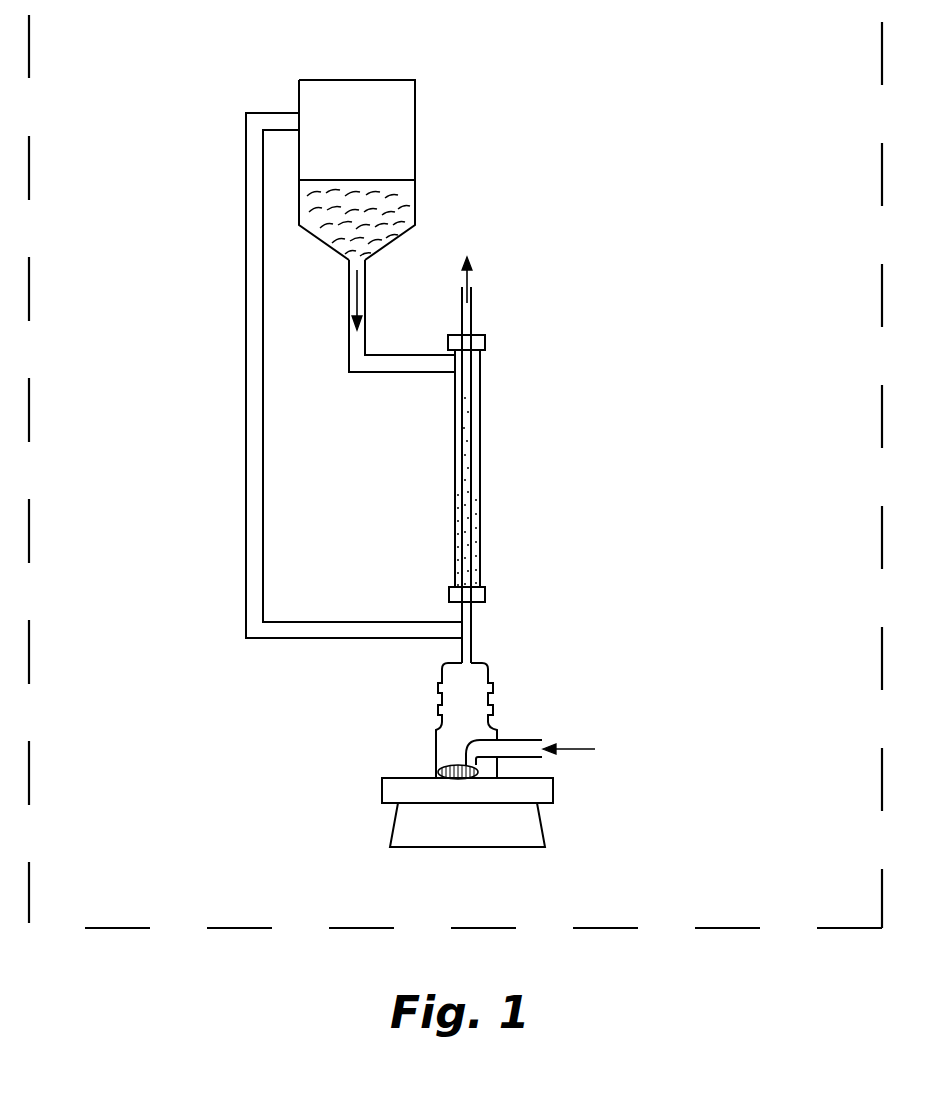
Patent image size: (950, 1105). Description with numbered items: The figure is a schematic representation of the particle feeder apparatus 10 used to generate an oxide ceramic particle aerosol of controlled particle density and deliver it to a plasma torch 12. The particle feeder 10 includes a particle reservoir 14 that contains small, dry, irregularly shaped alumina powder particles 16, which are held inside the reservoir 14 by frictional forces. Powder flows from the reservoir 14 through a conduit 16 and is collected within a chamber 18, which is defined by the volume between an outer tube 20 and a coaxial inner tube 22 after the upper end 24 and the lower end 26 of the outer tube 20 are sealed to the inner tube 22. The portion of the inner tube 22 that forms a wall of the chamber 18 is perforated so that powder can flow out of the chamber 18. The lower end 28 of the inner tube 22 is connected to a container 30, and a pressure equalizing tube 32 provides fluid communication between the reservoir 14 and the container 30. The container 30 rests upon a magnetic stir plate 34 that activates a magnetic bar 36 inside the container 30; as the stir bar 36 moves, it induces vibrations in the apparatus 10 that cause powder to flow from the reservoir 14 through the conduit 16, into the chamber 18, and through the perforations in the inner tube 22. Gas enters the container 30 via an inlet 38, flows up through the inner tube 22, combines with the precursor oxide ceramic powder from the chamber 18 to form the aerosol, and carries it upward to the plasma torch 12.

The particle feeder apparatus 10 is at (118, 928).
The plasma torch 12 is at (563, 264).
The particle reservoir 14 is at (398, 108).
The powder particles 16 is at (405, 215).
The chamber 18 is at (463, 477).
The outer tube 20 is at (480, 415).
The inner tube 22 is at (471, 456).
The upper end 24 is at (482, 335).
The lower end 26 is at (477, 603).
The lower end of inner tube 28 is at (471, 655).
The container 30 is at (490, 665).
The pressure equalizing tube 32 is at (247, 470).
The magnetic stir plate 34 is at (542, 836).
The magnetic bar 36 is at (440, 768).
The inlet 38 is at (513, 740).